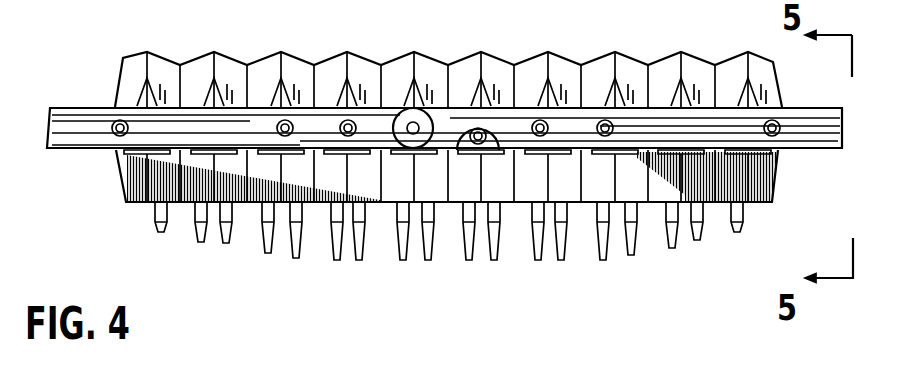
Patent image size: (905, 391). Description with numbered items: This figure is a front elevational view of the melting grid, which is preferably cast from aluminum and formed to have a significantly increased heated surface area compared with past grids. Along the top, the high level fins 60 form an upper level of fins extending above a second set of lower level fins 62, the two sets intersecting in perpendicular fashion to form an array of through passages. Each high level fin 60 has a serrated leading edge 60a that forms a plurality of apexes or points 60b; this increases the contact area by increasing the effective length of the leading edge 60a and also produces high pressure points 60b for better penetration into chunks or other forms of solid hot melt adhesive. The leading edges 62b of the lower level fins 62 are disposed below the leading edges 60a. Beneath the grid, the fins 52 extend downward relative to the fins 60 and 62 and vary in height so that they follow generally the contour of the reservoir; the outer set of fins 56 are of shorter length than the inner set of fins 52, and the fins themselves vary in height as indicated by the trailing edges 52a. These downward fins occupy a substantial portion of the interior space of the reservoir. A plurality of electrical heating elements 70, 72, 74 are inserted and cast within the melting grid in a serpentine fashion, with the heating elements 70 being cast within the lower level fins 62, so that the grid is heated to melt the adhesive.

The fins 52 is at (490, 261).
The trailing edges 52a is at (354, 262).
The outer set of fins 56 is at (196, 236).
The high level fins 60 is at (130, 56).
The serrated leading edge 60a is at (245, 63).
The apexes or points 60b is at (147, 54).
The lower level fins 62 is at (688, 91).
The leading edges 62b is at (550, 86).
The electrical heating element 70 is at (116, 134).
The electrical heating element 72 is at (352, 122).
The electrical heating element 74 is at (609, 120).